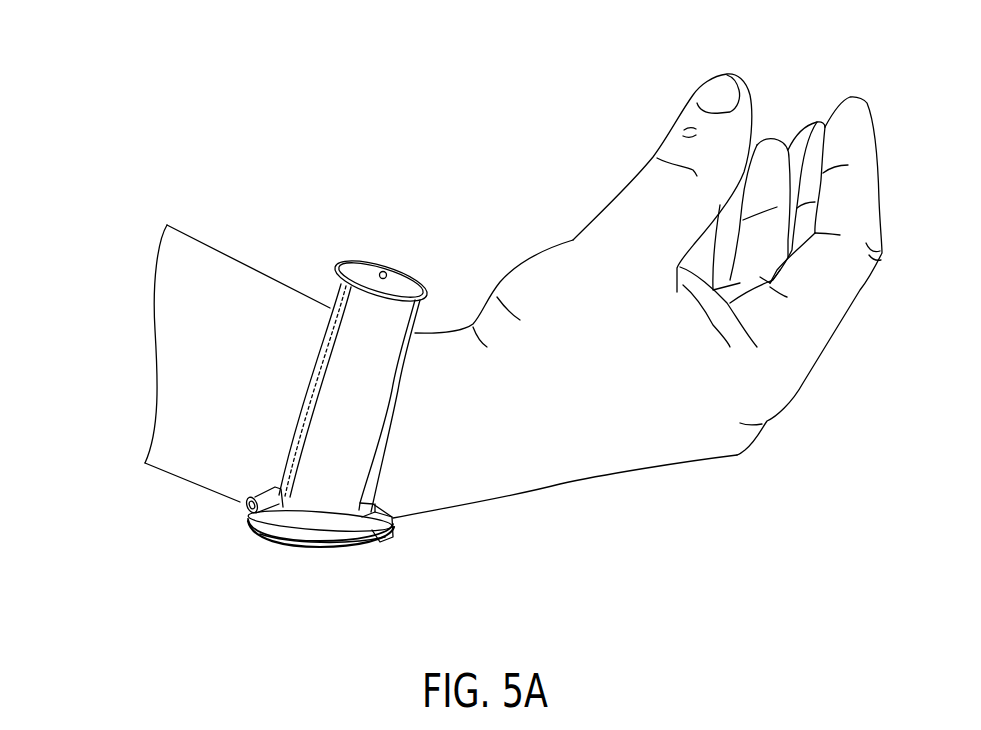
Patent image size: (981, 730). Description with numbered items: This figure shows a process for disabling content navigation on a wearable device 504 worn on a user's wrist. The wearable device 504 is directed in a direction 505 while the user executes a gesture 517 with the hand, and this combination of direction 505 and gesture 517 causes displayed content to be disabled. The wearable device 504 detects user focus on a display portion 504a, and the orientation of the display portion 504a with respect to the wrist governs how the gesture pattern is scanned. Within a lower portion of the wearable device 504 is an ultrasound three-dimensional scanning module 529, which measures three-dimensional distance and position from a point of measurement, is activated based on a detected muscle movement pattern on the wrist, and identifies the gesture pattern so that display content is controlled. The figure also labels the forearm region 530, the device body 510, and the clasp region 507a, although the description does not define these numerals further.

The direction 505 is at (97, 356).
The gesture 517 is at (780, 66).
The wrist 530 is at (508, 480).
The wearable device 510 is at (397, 151).
The ultrasound three-dimensional scanning module 529 is at (400, 290).
The display portion 504a is at (317, 540).
The wearable device 504 is at (390, 540).
The clasp 507a is at (182, 517).